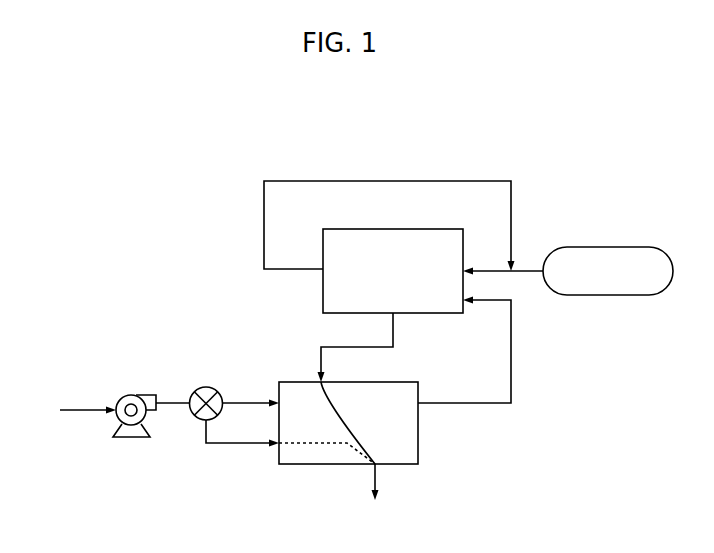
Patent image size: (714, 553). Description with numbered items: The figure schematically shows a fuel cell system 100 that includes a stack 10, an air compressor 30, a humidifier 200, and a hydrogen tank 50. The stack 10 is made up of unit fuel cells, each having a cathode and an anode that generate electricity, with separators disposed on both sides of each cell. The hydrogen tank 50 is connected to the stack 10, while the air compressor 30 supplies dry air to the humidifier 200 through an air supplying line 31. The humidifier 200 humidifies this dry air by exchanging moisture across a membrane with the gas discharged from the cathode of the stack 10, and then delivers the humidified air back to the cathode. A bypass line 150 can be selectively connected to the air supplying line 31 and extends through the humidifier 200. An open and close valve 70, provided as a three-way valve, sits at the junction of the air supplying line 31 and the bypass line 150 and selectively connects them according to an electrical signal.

The fuel cell system 100 is at (378, 144).
The stack 10 is at (323, 290).
The hydrogen tank 50 is at (605, 247).
The humidifier 200 is at (428, 437).
The bypass line 150 is at (310, 447).
The air compressor 30 is at (128, 395).
The air supplying line 31 is at (172, 402).
The open and close valve 70 is at (205, 387).